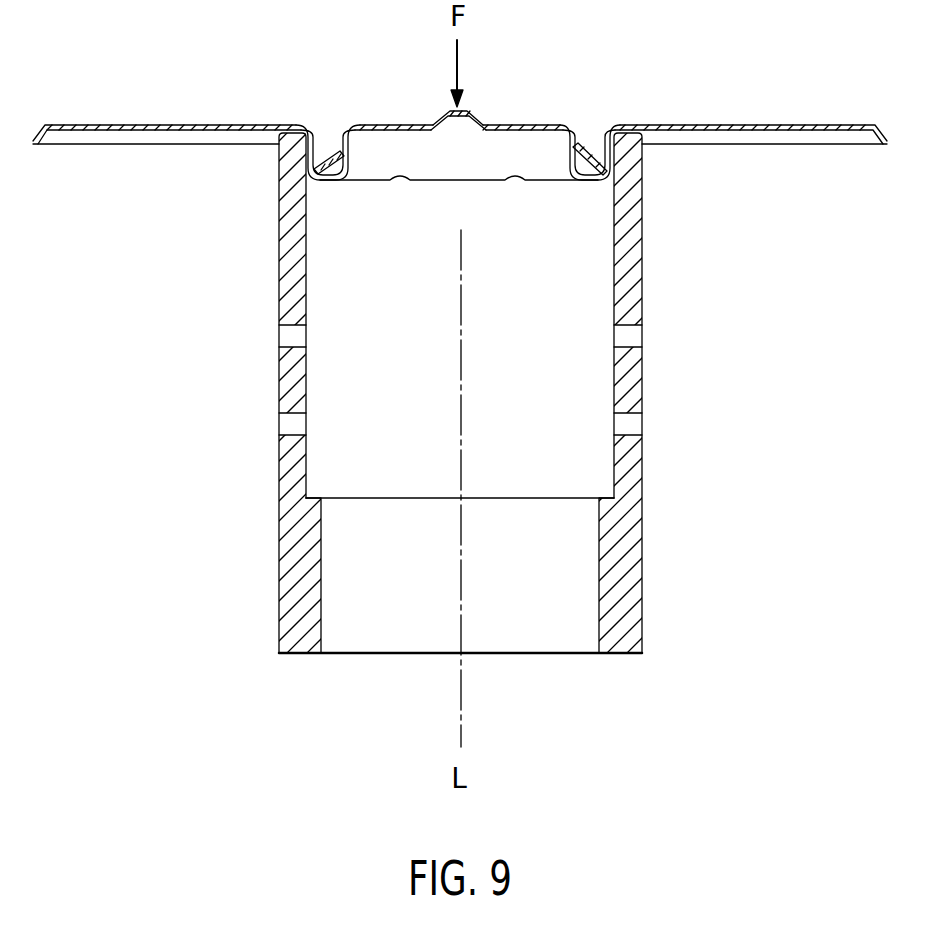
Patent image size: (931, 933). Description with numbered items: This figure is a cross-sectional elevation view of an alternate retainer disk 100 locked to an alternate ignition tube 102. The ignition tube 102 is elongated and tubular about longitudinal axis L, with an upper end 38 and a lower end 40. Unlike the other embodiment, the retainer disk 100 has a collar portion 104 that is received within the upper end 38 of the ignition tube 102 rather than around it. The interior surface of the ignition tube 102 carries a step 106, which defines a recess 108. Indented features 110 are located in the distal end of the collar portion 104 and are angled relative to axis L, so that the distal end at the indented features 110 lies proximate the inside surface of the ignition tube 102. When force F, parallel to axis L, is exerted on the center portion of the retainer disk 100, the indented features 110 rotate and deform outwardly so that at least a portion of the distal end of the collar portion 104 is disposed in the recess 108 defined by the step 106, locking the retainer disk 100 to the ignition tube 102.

The retainer disk 100 is at (188, 127).
The collar portion 104 is at (572, 148).
The step 106 is at (307, 163).
The recess 108 is at (607, 167).
The indented features 110 is at (587, 170).
The upper end 38 is at (288, 269).
The lower end 40 is at (625, 602).
The ignition tube 102 is at (642, 498).